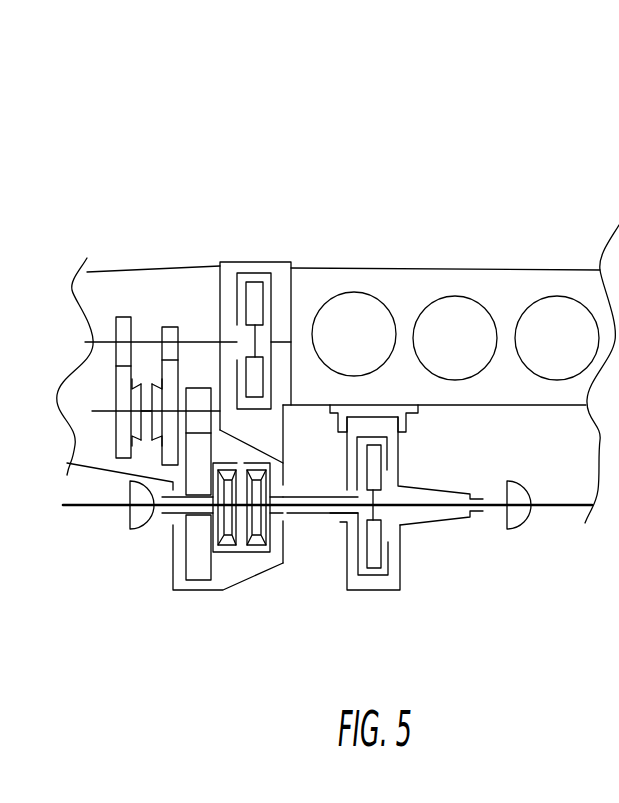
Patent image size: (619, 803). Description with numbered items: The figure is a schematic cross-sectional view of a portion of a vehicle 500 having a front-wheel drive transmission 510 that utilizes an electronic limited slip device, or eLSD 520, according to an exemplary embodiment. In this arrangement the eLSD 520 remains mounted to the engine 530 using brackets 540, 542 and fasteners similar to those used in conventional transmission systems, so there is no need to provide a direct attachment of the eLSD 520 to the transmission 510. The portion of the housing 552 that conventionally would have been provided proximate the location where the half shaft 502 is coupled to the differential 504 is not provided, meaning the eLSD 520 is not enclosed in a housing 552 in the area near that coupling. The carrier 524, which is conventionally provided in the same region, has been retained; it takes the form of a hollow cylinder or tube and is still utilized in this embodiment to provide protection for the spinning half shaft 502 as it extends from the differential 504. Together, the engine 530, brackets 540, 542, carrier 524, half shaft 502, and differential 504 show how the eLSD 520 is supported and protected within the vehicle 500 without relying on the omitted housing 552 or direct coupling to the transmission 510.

The vehicle 500 is at (256, 150).
The front-wheel drive transmission 510 is at (128, 268).
The engine 530 is at (436, 270).
The carrier 524 is at (313, 495).
The bracket 542 is at (345, 405).
The bracket 540 is at (405, 427).
The half shaft 502 is at (437, 508).
The differential 504 is at (235, 515).
The housing 552 is at (365, 590).
The eLSD 520 is at (422, 608).